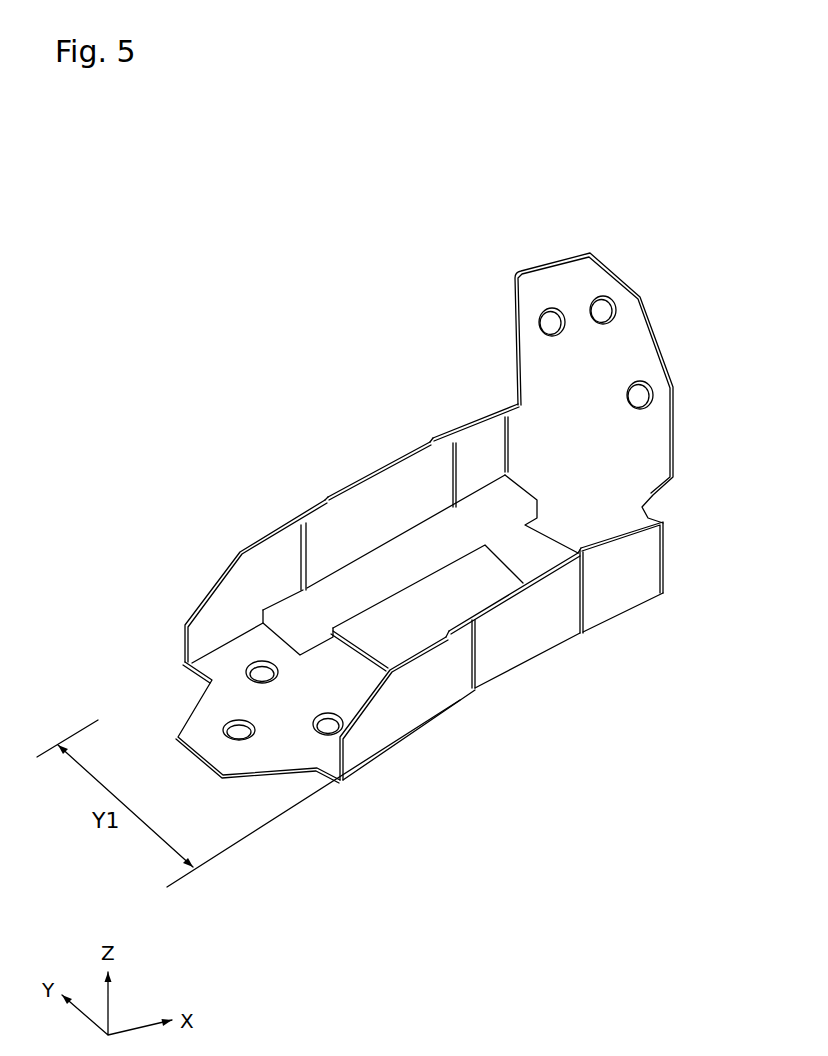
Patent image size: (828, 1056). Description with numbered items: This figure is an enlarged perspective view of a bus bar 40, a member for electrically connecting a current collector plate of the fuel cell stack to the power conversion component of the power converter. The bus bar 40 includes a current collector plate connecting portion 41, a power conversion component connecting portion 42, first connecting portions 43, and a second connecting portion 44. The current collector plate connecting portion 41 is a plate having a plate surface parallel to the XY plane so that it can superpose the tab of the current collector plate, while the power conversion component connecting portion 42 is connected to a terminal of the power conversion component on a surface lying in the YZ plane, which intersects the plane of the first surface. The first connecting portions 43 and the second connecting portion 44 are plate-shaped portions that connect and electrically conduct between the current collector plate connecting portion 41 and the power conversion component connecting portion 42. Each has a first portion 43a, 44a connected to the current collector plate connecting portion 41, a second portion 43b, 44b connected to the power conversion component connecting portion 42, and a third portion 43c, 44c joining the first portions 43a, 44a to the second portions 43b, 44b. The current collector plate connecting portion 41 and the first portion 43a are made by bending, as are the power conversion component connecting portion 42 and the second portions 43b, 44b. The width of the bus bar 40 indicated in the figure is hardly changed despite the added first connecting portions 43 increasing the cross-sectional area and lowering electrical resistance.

The bus bar 40 is at (238, 326).
The current collector plate connecting portion 41 is at (190, 753).
The power conversion component connecting portion 42 is at (540, 297).
The first connecting portion 43 is at (338, 424).
The first portion 43a is at (215, 580).
The second portion 43b is at (467, 424).
The third portion 43c is at (350, 488).
The second connecting portion 44 is at (427, 562).
The first portion 44a is at (327, 660).
The second portion 44b is at (527, 543).
The third portion 44c is at (380, 627).